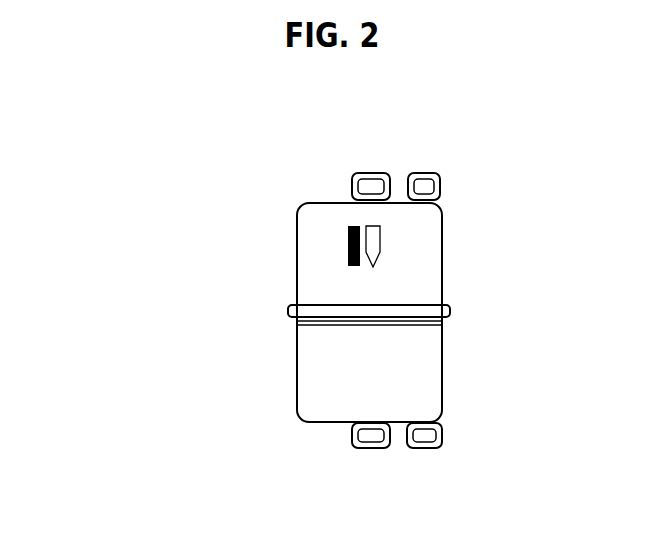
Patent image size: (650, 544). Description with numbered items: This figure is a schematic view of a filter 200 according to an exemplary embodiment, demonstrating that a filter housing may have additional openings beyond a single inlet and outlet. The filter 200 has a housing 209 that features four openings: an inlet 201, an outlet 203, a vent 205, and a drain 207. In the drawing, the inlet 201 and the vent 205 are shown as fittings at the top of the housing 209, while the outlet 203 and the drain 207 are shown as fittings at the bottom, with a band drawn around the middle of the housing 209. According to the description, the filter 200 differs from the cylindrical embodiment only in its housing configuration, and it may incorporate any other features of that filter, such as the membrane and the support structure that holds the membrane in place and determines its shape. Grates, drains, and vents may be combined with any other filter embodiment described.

The filter 200 is at (272, 272).
The inlet 201 is at (355, 187).
The vent 205 is at (450, 187).
The housing 209 is at (452, 293).
The outlet 203 is at (357, 442).
The drain 207 is at (453, 433).